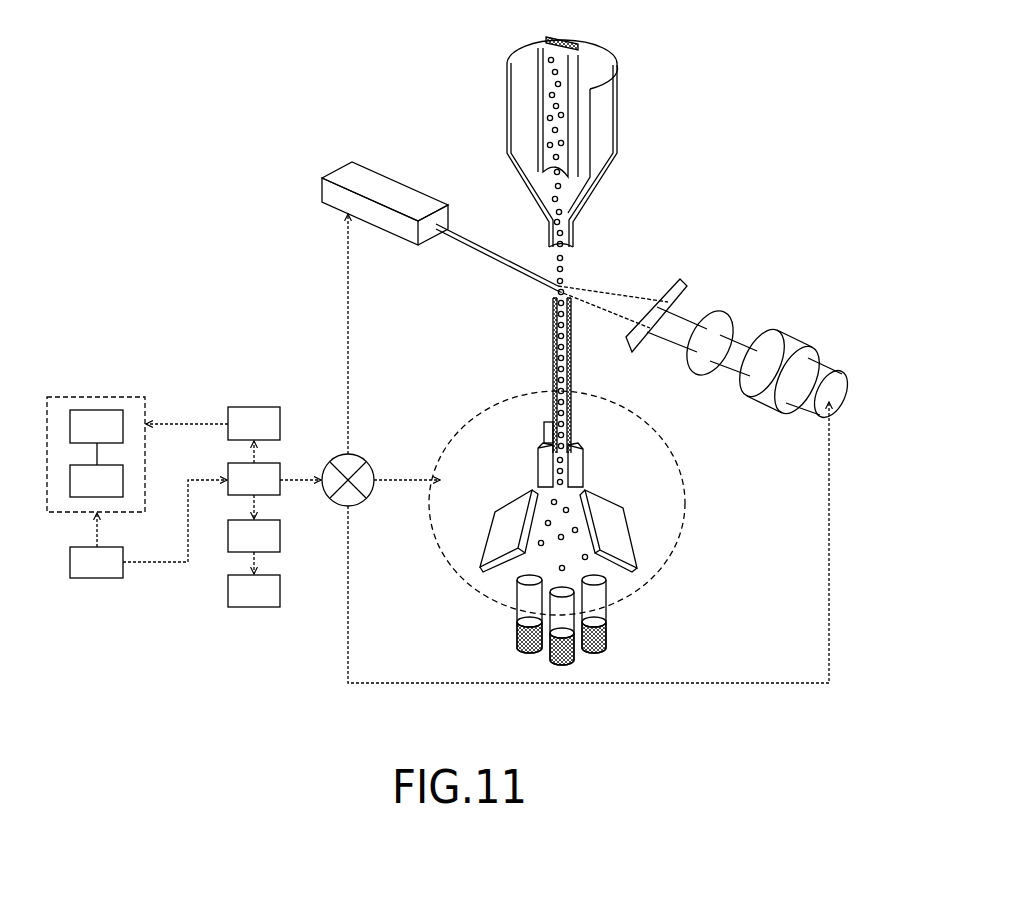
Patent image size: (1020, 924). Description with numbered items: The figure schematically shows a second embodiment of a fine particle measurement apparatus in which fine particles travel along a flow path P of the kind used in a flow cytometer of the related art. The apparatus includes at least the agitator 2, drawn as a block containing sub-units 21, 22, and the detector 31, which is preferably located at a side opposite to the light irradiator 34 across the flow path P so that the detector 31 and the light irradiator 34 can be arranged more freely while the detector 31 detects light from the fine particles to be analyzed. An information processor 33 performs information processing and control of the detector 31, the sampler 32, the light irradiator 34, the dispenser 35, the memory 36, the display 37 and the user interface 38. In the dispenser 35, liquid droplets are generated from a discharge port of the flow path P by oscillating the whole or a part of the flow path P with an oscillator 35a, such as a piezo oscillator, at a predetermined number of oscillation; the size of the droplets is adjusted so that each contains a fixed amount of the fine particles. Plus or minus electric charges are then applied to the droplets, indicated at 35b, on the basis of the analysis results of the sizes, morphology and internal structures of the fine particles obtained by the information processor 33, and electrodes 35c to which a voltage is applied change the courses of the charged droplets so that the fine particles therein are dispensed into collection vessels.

The agitator 2 is at (96, 428).
The processing unit 21 is at (96, 426).
The storage unit 22 is at (96, 481).
The detector 31 is at (378, 178).
The sampler 32 is at (254, 423).
The information processor 33 is at (254, 479).
The light irradiator 34 is at (823, 372).
The dispenser 35 is at (601, 526).
The oscillator 35a is at (545, 427).
The charging of liquid droplets 35b is at (540, 458).
The deflection plates 35c is at (620, 540).
The memory 36 is at (254, 536).
The display 37 is at (254, 591).
The user interface 38 is at (96, 562).
The flow path P is at (553, 352).